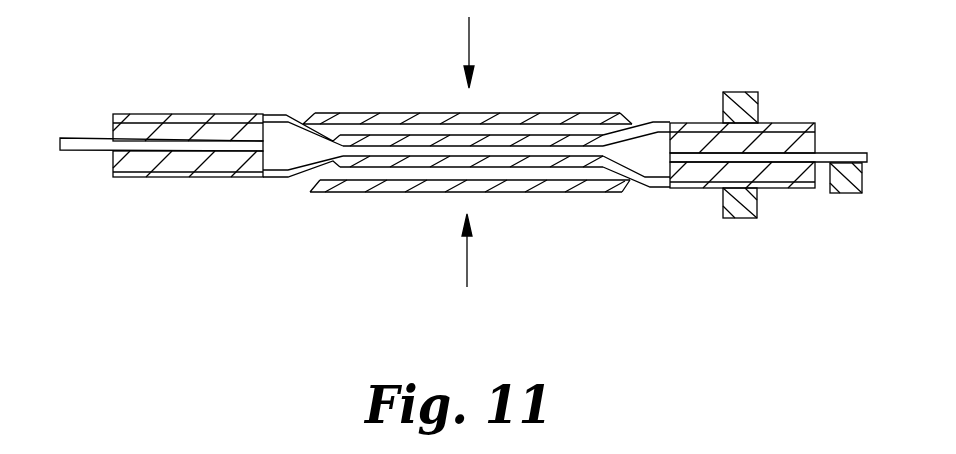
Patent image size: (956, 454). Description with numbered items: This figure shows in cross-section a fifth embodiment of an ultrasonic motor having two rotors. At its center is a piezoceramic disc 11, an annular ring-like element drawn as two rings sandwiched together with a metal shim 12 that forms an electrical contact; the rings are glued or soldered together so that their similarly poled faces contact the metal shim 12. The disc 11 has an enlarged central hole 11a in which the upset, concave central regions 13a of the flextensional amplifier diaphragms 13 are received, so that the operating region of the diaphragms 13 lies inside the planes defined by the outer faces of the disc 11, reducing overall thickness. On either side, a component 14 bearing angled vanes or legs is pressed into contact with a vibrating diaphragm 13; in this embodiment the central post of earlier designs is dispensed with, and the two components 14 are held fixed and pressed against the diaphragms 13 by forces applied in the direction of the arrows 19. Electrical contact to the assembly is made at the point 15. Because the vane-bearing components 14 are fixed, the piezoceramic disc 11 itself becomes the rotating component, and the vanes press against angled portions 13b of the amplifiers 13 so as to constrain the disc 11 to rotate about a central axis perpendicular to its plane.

The piezoceramic disc 11 is at (135, 130).
The enlarged central hole 11a is at (653, 157).
The metal shim 12 is at (88, 143).
The flextensional amplifier diaphragm 13 is at (270, 108).
The concave central region 13a is at (540, 162).
The angled portion 13b is at (292, 179).
The rotating component 14 is at (612, 114).
The electrical contact point 15 is at (733, 220).
The arrows 19 is at (472, 43).